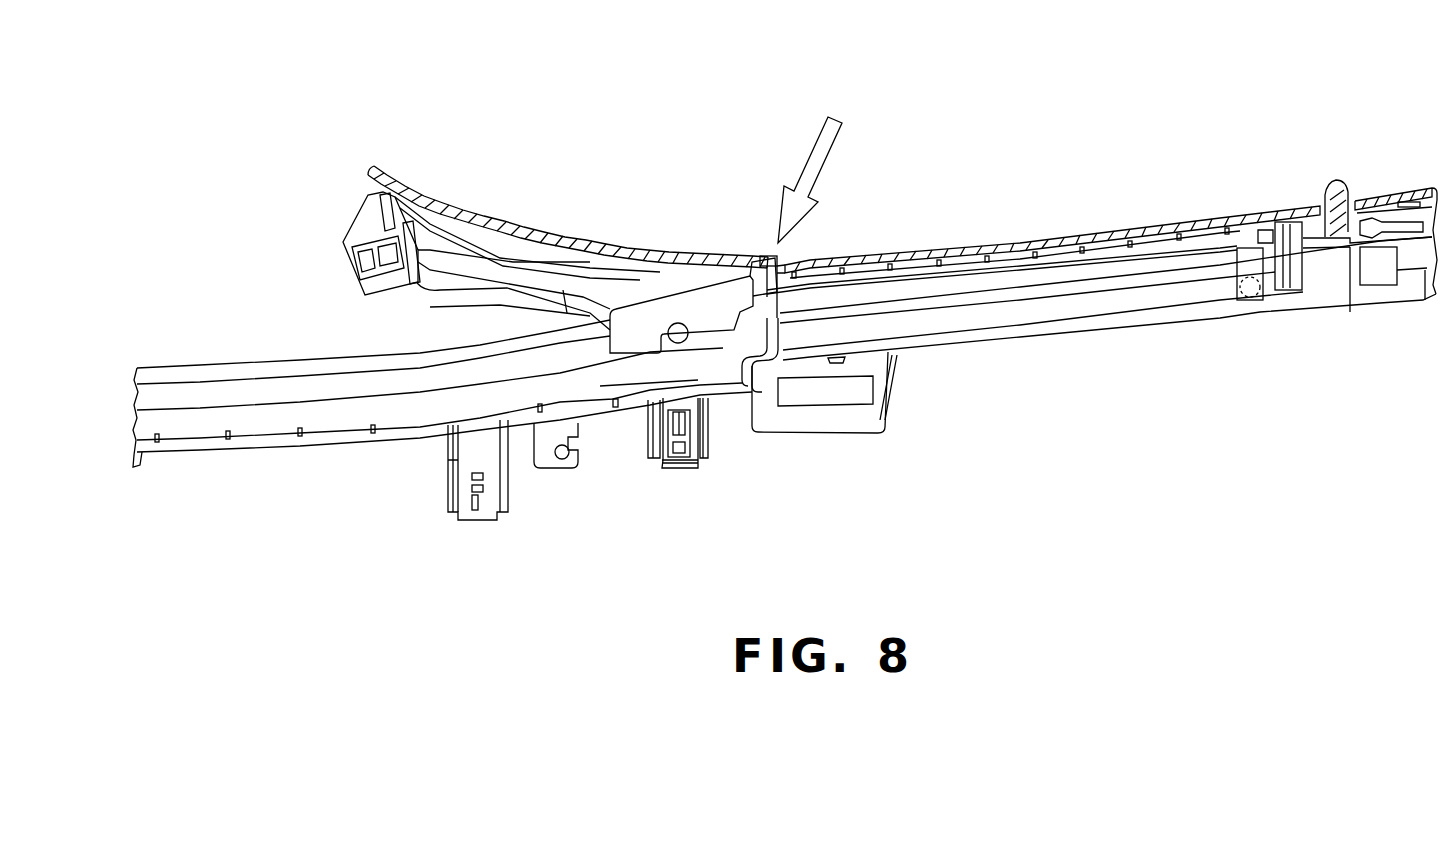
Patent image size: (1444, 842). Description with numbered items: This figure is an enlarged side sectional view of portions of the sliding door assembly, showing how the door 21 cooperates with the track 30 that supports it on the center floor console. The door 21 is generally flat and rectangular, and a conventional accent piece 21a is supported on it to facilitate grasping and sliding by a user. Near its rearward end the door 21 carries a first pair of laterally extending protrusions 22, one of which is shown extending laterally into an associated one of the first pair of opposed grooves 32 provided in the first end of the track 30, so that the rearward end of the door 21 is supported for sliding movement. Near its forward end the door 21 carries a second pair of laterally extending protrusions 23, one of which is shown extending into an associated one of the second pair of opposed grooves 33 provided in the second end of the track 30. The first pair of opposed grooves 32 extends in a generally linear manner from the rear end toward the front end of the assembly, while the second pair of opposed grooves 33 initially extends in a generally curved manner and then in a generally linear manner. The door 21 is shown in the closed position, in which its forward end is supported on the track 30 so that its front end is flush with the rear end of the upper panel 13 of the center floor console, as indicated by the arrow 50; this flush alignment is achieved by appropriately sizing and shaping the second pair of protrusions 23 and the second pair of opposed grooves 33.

The upper panel 13 is at (652, 256).
The door 21 is at (1050, 240).
The accent piece 21a is at (1335, 192).
The first pair of laterally extending protrusions 22 is at (1250, 300).
The second pair of laterally extending protrusions 23 is at (660, 345).
The track 30 is at (955, 345).
The first pair of opposed grooves 32 is at (1085, 307).
The second pair of opposed grooves 33 is at (257, 390).
The arrow 50 is at (810, 156).